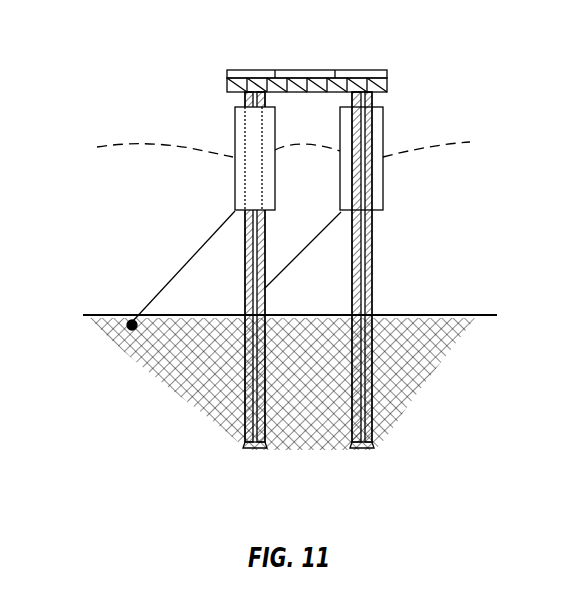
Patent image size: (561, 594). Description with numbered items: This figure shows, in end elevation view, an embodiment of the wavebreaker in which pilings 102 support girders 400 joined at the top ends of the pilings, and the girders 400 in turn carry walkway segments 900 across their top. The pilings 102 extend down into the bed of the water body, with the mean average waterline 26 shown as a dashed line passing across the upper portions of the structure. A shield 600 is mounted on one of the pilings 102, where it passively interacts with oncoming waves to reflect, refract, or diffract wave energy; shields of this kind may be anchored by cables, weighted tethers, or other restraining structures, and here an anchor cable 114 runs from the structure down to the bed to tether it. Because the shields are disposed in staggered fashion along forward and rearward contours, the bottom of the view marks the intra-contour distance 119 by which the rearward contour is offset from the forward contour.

The mean average waterline 26 is at (115, 145).
The walkway segments 900 is at (279, 70).
The girders 400 is at (228, 88).
The shield 600 is at (234, 131).
The pilings 102 is at (384, 133).
The anchor cables 114 is at (187, 262).
The intra-contour distance 119 is at (350, 443).